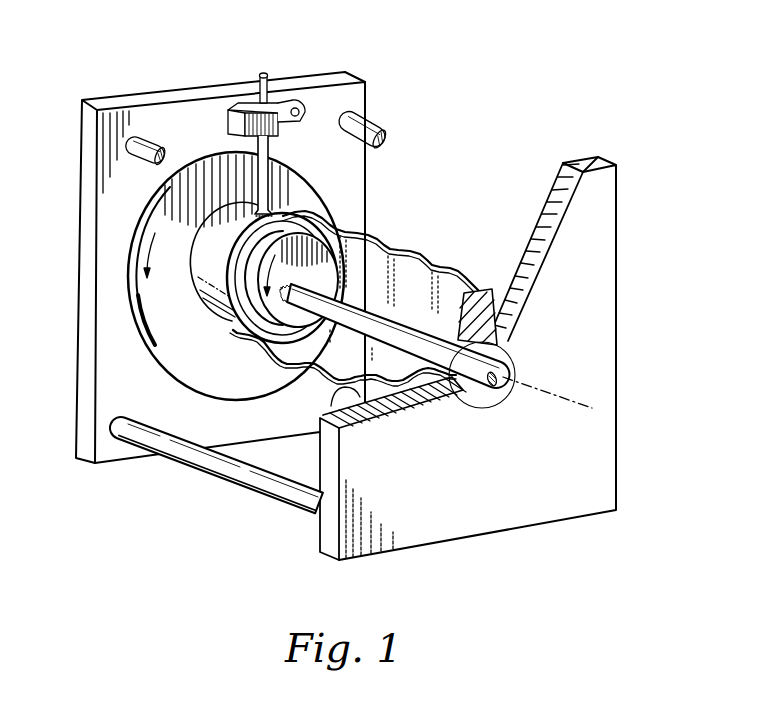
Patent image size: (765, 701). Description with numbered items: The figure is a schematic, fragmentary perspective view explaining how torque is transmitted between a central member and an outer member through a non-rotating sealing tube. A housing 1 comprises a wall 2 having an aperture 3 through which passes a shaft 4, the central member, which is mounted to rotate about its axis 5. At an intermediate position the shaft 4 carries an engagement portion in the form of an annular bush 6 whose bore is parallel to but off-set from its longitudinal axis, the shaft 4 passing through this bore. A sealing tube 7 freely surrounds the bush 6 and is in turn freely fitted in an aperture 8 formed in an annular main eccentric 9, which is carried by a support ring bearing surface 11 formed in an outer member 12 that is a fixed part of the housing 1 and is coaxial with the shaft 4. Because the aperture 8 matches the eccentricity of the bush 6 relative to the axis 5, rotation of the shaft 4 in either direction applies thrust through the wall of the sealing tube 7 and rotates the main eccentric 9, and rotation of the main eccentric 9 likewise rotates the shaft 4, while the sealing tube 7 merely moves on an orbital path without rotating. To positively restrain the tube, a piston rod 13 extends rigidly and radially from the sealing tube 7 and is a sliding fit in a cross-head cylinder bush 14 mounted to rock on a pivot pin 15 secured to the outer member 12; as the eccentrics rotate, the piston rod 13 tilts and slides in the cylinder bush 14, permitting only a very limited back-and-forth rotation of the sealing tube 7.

The housing 1 is at (328, 291).
The wall 2 is at (533, 508).
The aperture 3 is at (478, 392).
The shaft 4 is at (503, 365).
The axis 5 is at (556, 400).
The annular bush 6 is at (325, 268).
The sealing tube 7 is at (221, 316).
The aperture 8 is at (203, 312).
The main eccentric 9 is at (157, 325).
The support ring bearing surface 11 is at (145, 213).
The outer member 12 is at (152, 98).
The piston rod 13 is at (270, 78).
The cross-head cylinder bush 14 is at (230, 117).
The pivot pin 15 is at (300, 107).